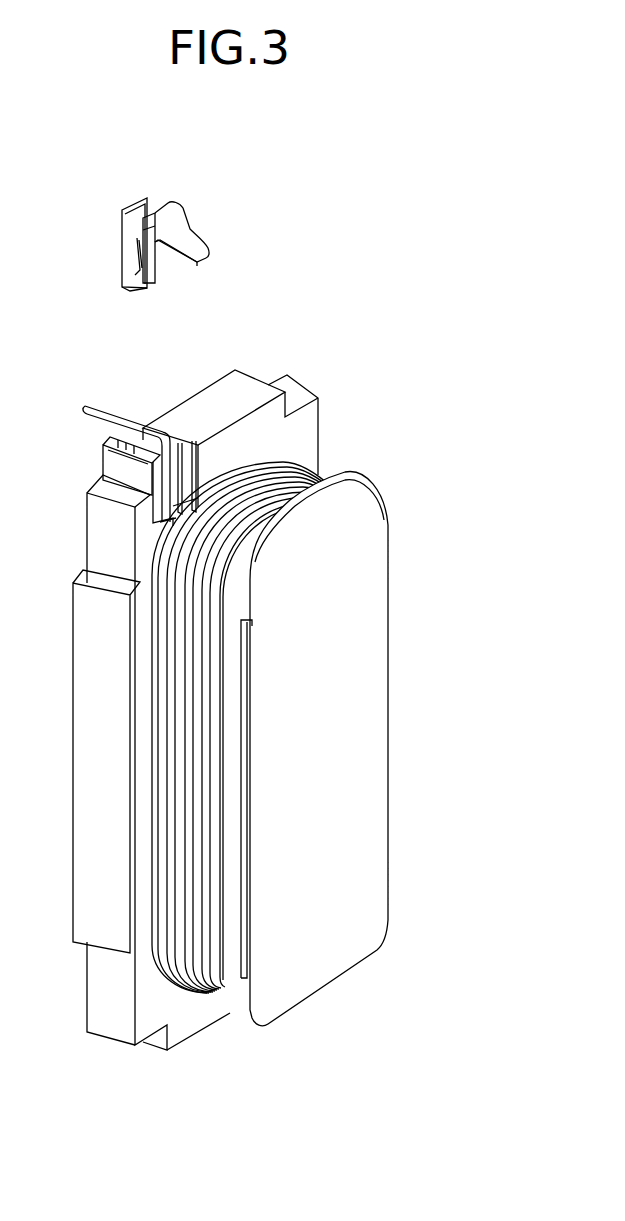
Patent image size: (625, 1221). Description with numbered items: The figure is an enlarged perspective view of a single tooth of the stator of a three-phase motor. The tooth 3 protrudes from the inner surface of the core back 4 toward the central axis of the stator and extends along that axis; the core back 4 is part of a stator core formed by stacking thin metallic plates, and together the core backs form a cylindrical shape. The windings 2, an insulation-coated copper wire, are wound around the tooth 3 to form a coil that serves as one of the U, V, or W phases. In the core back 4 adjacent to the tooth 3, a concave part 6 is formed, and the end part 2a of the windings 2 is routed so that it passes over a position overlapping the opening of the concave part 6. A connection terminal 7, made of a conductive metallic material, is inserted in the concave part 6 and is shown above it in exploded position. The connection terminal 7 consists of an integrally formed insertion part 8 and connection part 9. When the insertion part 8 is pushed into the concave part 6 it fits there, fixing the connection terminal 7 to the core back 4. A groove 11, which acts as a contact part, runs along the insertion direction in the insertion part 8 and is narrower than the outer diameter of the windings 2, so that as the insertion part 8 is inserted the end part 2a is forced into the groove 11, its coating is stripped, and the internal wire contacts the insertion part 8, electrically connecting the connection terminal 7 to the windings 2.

The windings 2 is at (287, 470).
The end part of the winding 2a is at (117, 414).
The tooth 3 is at (375, 716).
The core back 4 is at (208, 397).
The concave part 6 is at (118, 438).
The connection terminal 7 is at (203, 195).
The insertion part 8 is at (130, 227).
The connection part 9 is at (192, 245).
The groove (contact part) 11 is at (138, 256).